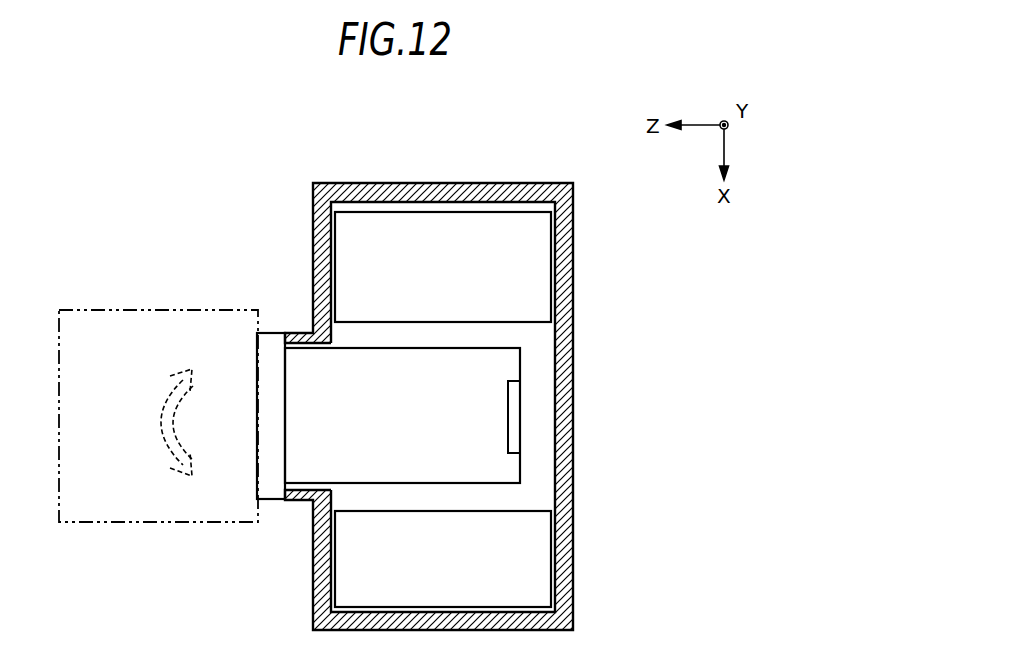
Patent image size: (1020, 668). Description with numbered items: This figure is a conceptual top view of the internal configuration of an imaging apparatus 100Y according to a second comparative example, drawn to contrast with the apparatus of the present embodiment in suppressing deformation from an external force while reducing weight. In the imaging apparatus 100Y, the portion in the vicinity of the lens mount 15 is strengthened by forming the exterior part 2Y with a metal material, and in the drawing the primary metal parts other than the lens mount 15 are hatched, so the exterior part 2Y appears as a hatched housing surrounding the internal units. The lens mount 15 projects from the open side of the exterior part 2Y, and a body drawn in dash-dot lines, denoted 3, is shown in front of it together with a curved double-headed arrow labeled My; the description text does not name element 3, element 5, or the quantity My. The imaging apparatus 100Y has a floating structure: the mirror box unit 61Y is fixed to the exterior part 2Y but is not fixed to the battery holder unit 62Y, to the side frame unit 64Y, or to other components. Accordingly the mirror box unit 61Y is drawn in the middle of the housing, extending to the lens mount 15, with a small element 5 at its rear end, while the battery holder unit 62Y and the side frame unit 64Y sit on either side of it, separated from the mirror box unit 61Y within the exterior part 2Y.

The imaging apparatus 100Y is at (140, 134).
The exterior part 2Y is at (473, 183).
The movable body / lens 3 is at (105, 310).
The sensor 5 is at (508, 418).
The lens mount 15 is at (257, 489).
The mirror box unit 61Y is at (520, 362).
The battery holder unit 62Y is at (552, 230).
The side frame unit 64Y is at (552, 535).
The moment about Y axis My is at (160, 418).